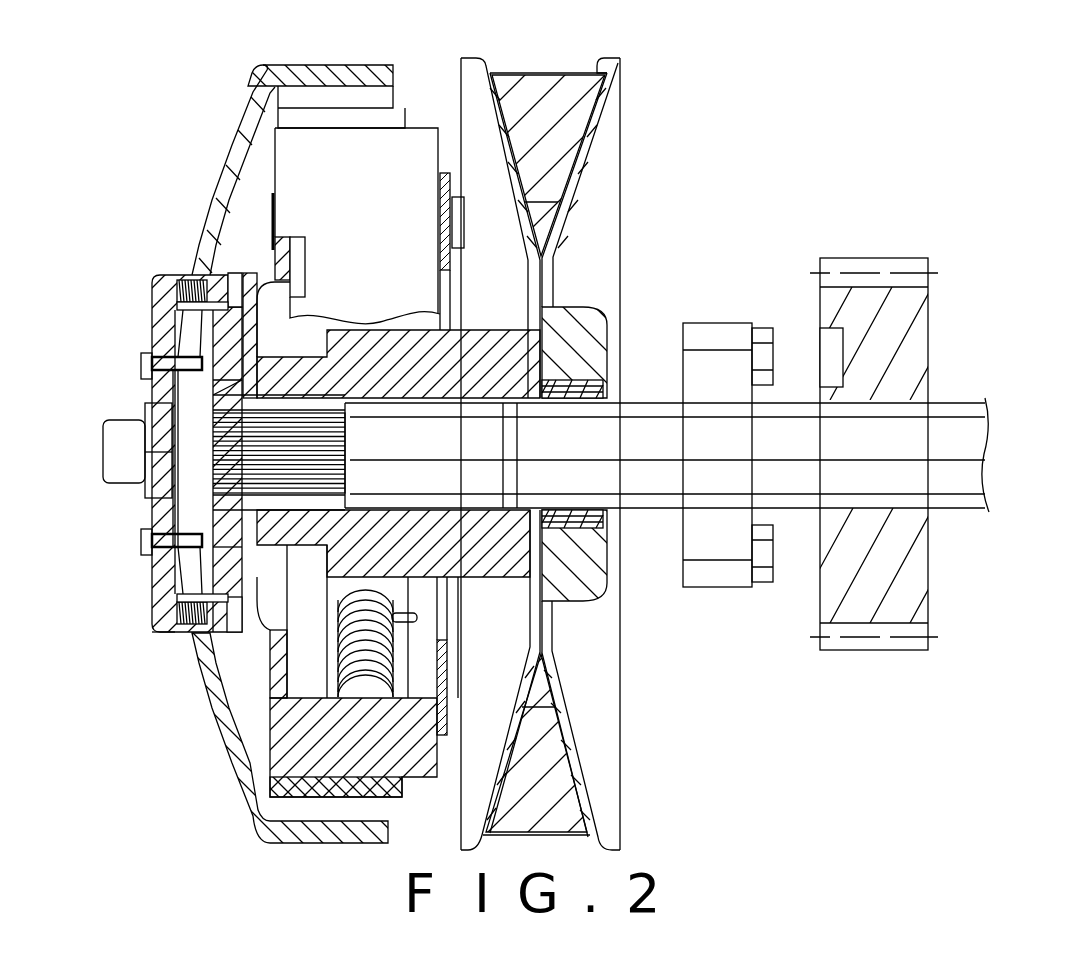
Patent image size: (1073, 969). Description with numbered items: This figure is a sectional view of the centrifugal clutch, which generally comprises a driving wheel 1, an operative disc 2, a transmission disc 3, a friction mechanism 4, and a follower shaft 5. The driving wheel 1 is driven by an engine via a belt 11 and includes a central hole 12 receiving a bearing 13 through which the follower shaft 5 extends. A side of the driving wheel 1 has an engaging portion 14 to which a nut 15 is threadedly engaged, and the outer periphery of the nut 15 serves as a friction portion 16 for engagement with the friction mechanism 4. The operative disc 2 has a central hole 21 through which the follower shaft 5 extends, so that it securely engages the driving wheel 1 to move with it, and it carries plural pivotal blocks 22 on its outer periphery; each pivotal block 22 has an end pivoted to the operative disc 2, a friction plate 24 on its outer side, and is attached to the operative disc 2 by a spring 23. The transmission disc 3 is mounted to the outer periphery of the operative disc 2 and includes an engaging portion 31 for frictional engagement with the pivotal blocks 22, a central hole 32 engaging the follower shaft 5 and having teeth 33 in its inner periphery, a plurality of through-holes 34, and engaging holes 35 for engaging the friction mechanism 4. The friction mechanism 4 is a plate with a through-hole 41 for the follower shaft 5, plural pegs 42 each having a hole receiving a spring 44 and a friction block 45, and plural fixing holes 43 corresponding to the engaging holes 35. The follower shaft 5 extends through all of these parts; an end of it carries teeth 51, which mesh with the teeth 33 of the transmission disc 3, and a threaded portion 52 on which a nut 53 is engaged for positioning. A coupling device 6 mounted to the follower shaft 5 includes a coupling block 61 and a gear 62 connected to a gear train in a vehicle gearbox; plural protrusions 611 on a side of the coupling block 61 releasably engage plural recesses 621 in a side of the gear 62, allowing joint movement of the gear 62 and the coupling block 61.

The driving wheel 1 is at (584, 454).
The belt 11 is at (540, 103).
The central hole 12 is at (520, 332).
The bearing 13 is at (600, 383).
The engaging portion 14 is at (232, 397).
The nut 15 is at (228, 366).
The friction portion 16 is at (221, 277).
The operative disc 2 is at (294, 476).
The central hole 21 is at (230, 388).
The pivotal block 22 is at (343, 176).
The spring 23 is at (362, 660).
The friction plate 24 is at (315, 121).
The transmission disc 3 is at (205, 442).
The engaging portion 31 is at (320, 77).
The central hole 32 is at (155, 540).
The teeth 33 is at (165, 515).
The through-hole 34 is at (190, 279).
The engaging hole 35 is at (160, 351).
The friction mechanism 4 is at (130, 563).
The through-hole 41 is at (172, 500).
The peg 42 is at (190, 626).
The fixing hole 43 is at (198, 562).
The spring 44 is at (178, 626).
The friction block 45 is at (207, 626).
The follower shaft 5 is at (587, 603).
The teeth 51 is at (292, 455).
The threaded portion 52 is at (112, 470).
The nut 53 is at (160, 470).
The coupling device 6 is at (755, 521).
The coupling block 61 is at (718, 556).
The protrusion 611 is at (768, 548).
The gear 62 is at (884, 420).
The recess 621 is at (833, 352).